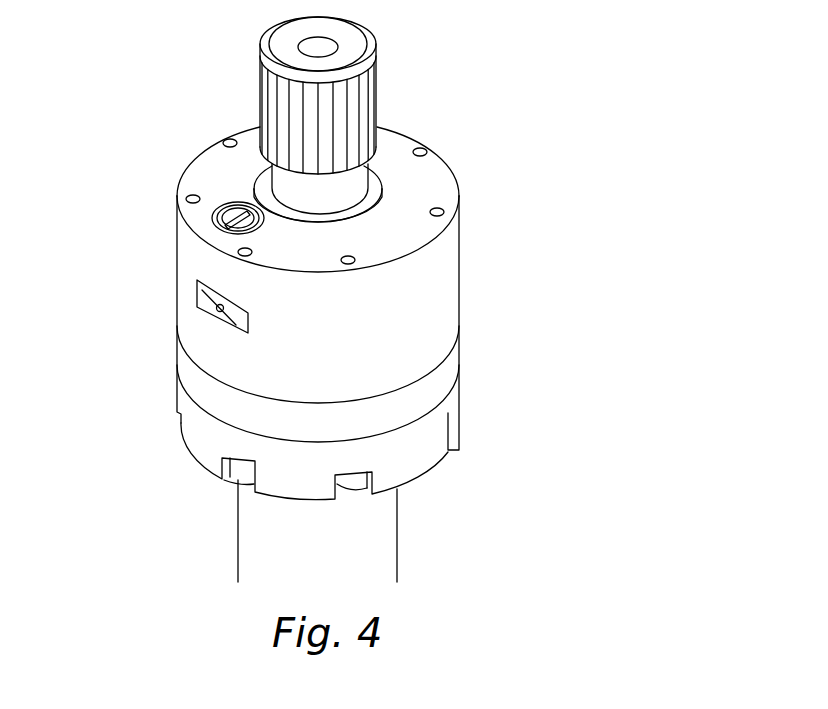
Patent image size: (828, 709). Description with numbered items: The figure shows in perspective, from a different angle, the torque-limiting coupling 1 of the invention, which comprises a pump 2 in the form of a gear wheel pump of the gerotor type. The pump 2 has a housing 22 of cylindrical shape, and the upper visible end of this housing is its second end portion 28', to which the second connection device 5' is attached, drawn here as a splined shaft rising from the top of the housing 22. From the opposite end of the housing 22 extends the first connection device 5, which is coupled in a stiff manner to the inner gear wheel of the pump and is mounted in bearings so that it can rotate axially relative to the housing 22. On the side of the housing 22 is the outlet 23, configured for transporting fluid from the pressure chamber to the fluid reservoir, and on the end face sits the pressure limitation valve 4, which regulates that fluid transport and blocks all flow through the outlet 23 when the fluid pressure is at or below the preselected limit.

The torque-limiting coupling 1 is at (108, 92).
The pump 2 is at (148, 398).
The pressure limitation valve 4 is at (225, 205).
The first connection device 5 is at (360, 531).
The second connection device 5' is at (367, 119).
The housing 22 is at (445, 289).
The outlet 23 is at (217, 309).
The second end portion 28' is at (316, 178).